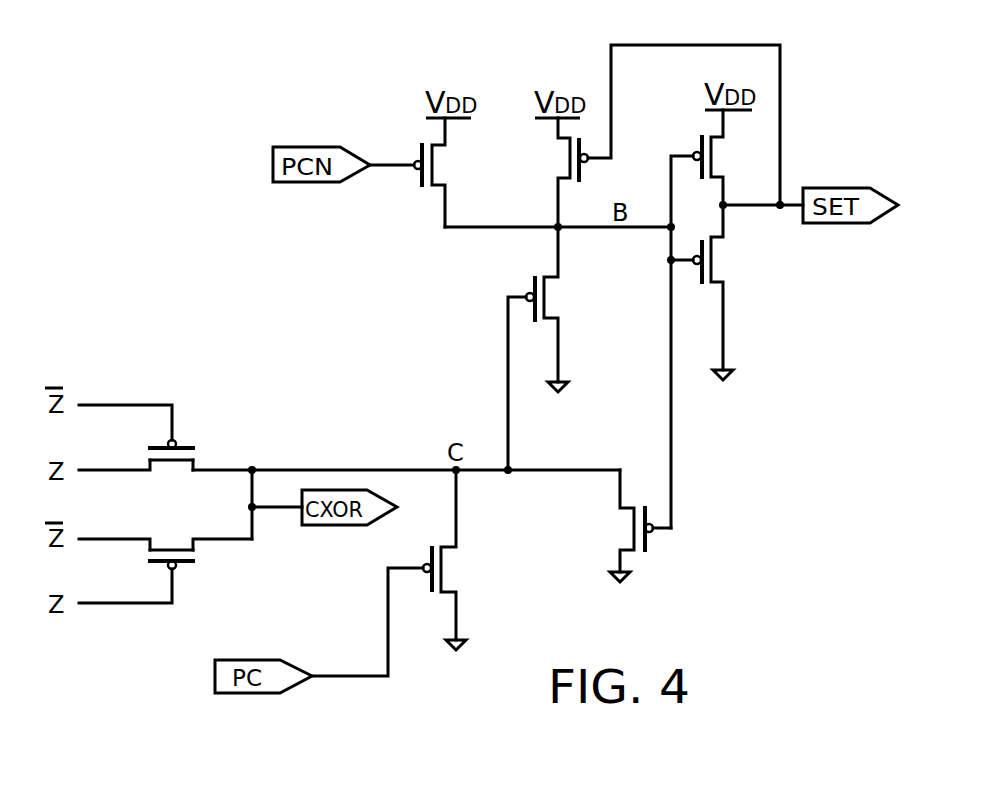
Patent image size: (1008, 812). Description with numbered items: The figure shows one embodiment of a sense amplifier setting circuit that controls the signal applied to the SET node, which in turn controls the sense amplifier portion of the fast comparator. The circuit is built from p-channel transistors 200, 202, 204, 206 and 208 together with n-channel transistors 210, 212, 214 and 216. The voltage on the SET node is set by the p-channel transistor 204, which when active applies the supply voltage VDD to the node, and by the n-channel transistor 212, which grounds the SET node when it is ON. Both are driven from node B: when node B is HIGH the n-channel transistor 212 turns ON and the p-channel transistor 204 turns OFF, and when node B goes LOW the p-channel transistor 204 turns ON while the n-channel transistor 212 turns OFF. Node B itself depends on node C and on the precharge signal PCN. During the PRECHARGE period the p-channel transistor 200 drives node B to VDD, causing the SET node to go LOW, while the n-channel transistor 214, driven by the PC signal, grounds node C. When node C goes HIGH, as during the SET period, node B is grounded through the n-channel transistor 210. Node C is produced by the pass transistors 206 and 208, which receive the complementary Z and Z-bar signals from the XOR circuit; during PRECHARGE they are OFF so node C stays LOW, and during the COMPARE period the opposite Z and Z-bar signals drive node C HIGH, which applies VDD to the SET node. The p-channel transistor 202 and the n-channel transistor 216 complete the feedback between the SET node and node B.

The p-channel transistor 200 is at (417, 178).
The p-channel transistor 202 is at (583, 173).
The p-channel transistor 204 is at (712, 158).
The p-channel transistor 206 is at (180, 448).
The p-channel transistor 208 is at (182, 563).
The n-channel transistor 210 is at (532, 282).
The n-channel transistor 212 is at (713, 262).
The n-channel transistor 214 is at (443, 577).
The n-channel transistor 216 is at (650, 545).